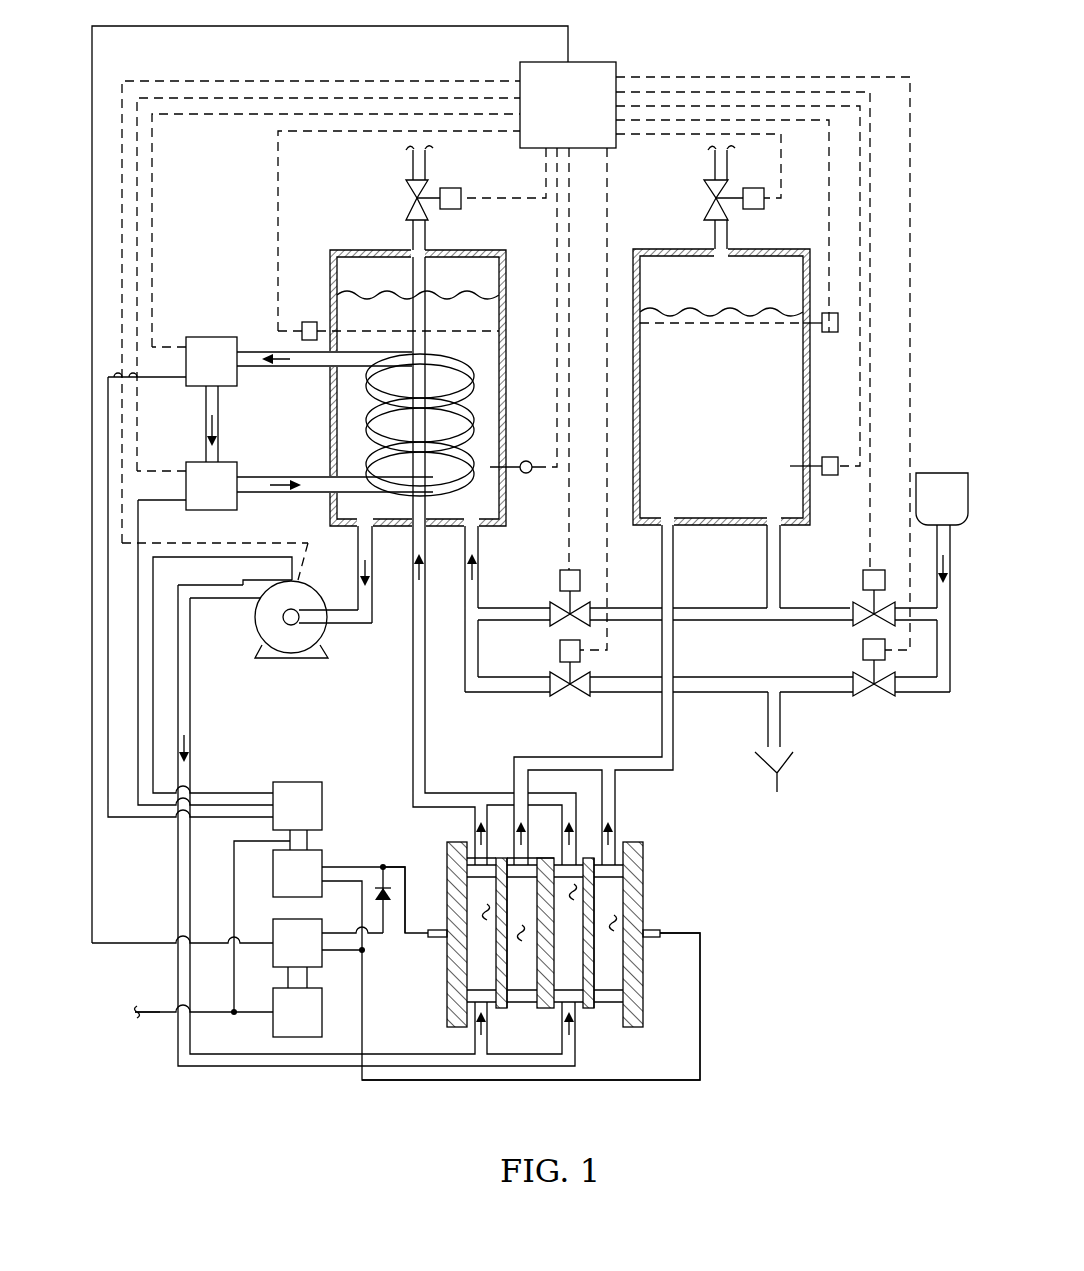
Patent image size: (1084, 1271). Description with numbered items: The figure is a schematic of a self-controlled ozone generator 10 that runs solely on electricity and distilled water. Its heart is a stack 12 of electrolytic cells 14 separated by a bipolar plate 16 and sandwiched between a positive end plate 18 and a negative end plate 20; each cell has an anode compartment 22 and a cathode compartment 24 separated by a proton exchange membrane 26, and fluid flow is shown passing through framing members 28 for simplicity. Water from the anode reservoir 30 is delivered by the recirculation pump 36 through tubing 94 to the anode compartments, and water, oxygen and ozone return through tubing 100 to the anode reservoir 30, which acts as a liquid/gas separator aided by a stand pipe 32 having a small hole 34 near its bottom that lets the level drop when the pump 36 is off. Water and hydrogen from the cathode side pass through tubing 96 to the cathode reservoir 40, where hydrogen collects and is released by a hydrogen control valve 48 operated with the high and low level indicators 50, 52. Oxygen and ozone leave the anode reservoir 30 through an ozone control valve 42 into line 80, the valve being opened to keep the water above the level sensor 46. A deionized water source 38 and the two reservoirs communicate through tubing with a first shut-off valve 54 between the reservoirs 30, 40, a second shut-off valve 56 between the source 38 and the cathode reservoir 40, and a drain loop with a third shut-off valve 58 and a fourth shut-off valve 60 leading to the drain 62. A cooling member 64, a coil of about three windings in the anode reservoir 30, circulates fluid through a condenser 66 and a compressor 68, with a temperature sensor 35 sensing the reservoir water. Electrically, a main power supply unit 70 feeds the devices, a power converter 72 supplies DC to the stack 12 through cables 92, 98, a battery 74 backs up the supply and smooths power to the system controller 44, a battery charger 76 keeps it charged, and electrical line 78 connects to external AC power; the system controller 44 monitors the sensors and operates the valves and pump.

The ozone generator 10 is at (871, 48).
The stack of electrolytic cells 12 is at (570, 929).
The electrolytic cell 14 is at (509, 1019).
The bipolar plate 16 is at (557, 933).
The positive end plate 18 is at (447, 990).
The negative end plate 20 is at (637, 853).
The anode compartment 22 is at (520, 933).
The cathode compartment 24 is at (612, 923).
The proton exchange membrane 26 is at (594, 967).
The framing member 28 is at (606, 1005).
The anode reservoir 30 is at (330, 253).
The stand pipe 32 is at (423, 282).
The small hole 34 is at (427, 512).
The temperature sensor 35 is at (533, 475).
The recirculation pump 36 is at (286, 662).
The deionized water source 38 is at (930, 508).
The cathode reservoir 40 is at (809, 380).
The ozone control valve 42 is at (404, 202).
The system controller 44 is at (556, 118).
The level sensor 46 is at (303, 322).
The hydrogen control valve 48 is at (710, 210).
The high liquid level indicator 50 is at (838, 320).
The low liquid level indicator 52 is at (838, 457).
The first shut-off valve 54 is at (553, 605).
The second shut-off valve 56 is at (858, 605).
The third shut-off valve 58 is at (553, 678).
The fourth shut-off valve 60 is at (858, 677).
The drain 62 is at (785, 770).
The cooling member 64 is at (367, 413).
The condenser 66 is at (199, 375).
The compressor 68 is at (199, 500).
The main power supply unit 70 is at (285, 820).
The power converter 72 is at (285, 888).
The battery 74 is at (285, 957).
The battery charger 76 is at (285, 1027).
The electrical line 78 is at (156, 1014).
The line 80 is at (408, 170).
The cable 92 is at (407, 868).
The tubing 94 is at (235, 1068).
The tubing 96 is at (673, 755).
The cable 98 is at (700, 1015).
The tubing 100 is at (415, 743).